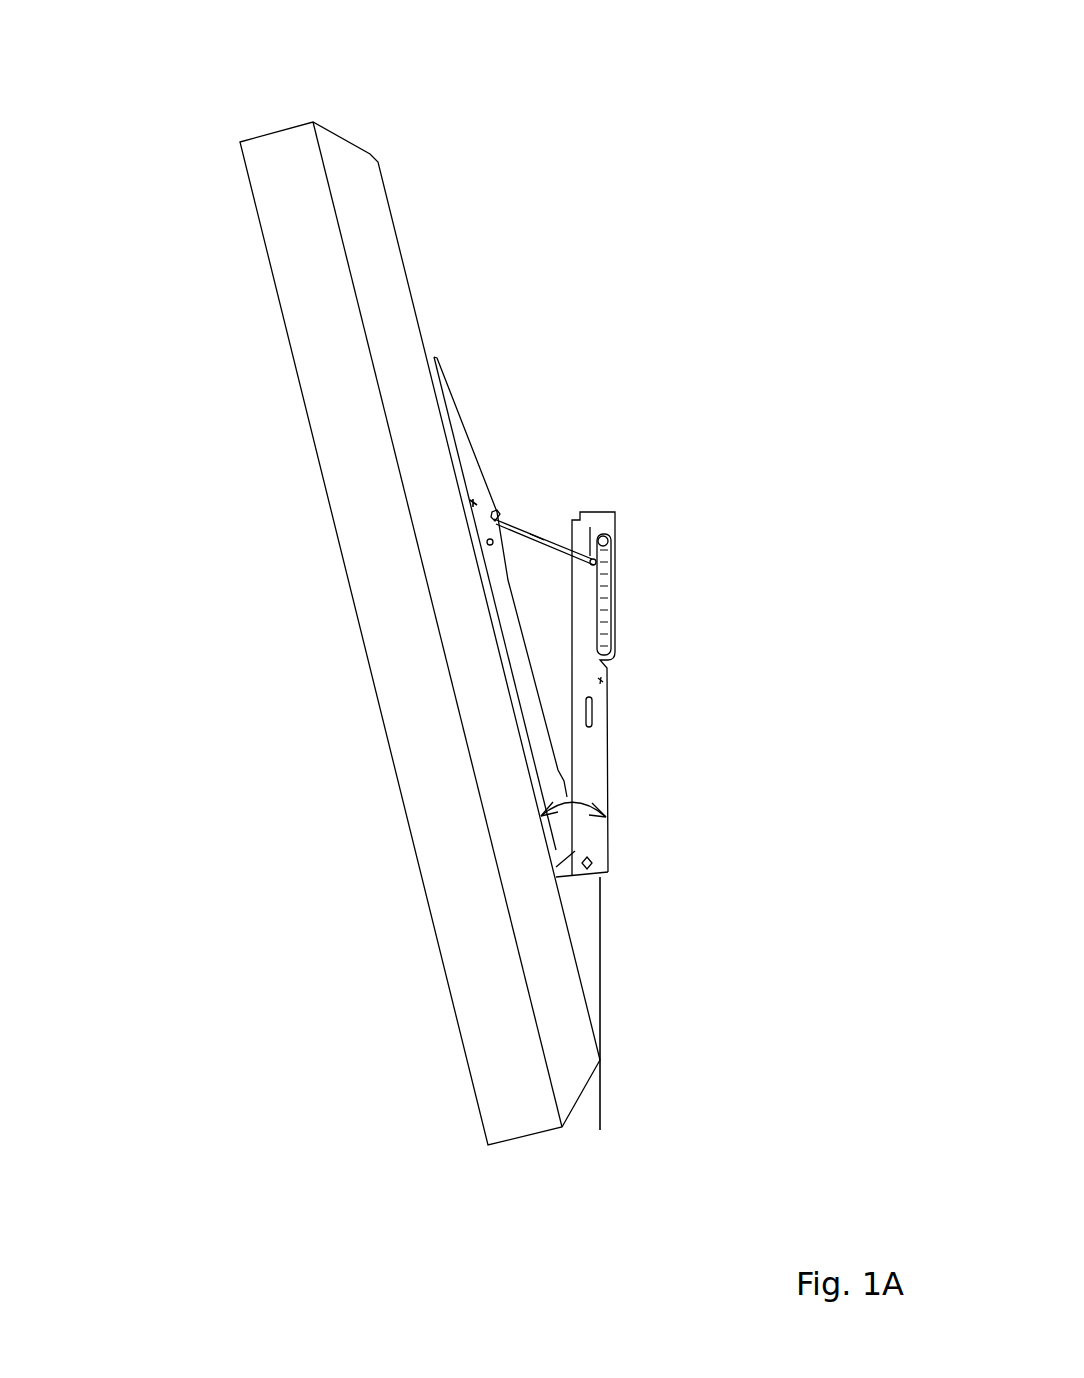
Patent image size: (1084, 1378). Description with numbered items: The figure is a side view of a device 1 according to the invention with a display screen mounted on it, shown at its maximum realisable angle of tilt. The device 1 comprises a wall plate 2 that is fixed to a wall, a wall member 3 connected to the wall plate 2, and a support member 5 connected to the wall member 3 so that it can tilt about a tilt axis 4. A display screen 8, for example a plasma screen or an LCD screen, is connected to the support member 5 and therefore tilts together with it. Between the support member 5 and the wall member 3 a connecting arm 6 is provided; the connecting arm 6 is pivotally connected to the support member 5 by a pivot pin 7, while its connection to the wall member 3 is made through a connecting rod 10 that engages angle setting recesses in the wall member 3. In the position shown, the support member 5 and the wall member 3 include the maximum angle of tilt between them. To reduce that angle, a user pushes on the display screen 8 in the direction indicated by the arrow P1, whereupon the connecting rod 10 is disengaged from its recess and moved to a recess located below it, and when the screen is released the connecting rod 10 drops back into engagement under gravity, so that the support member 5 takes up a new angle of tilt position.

The device 1 is at (603, 120).
The wall plate 2 is at (617, 612).
The wall member 3 is at (590, 750).
The tilt axis 4 is at (590, 851).
The support member 5 is at (460, 430).
The connecting arm 6 is at (535, 537).
The pivot pin 7 is at (505, 513).
The display screen 8 is at (357, 548).
The connecting rod 10 is at (618, 545).
The arrow P1 is at (223, 52).